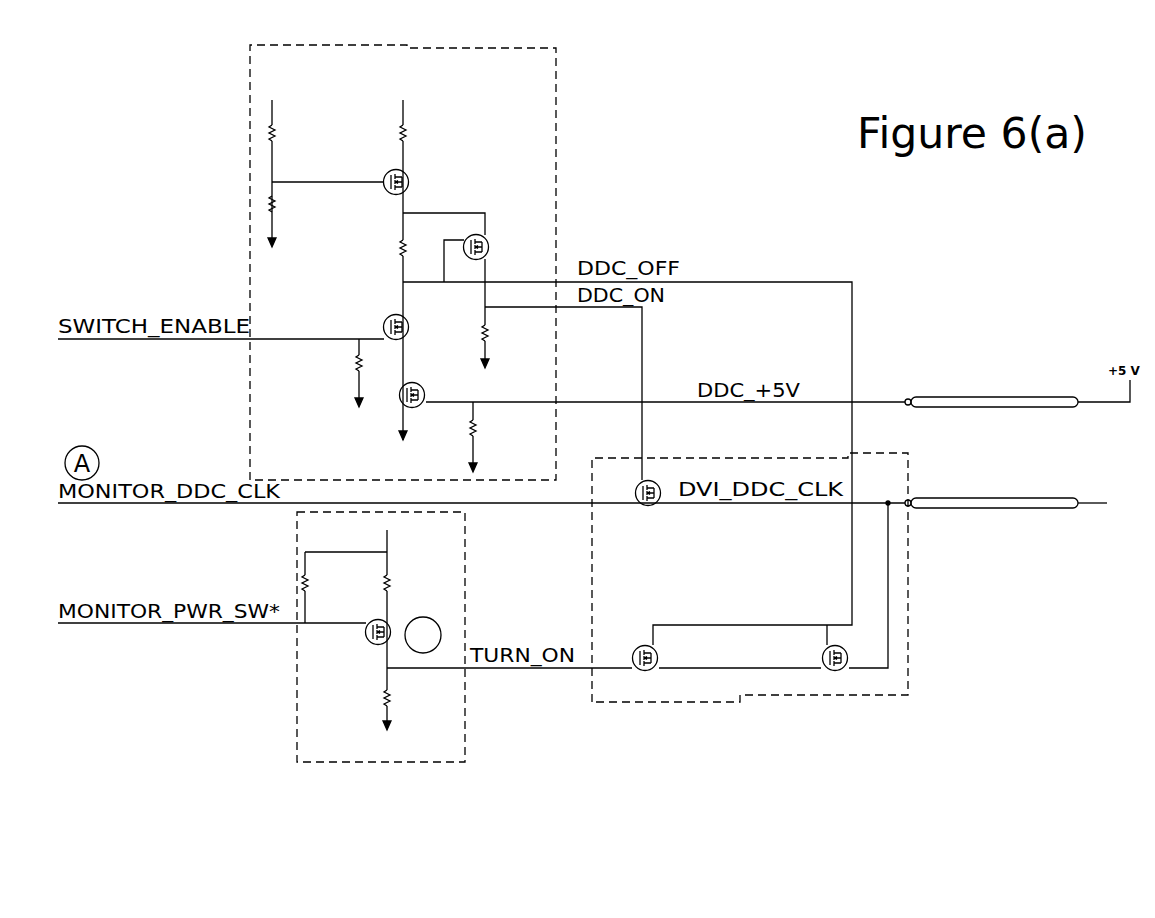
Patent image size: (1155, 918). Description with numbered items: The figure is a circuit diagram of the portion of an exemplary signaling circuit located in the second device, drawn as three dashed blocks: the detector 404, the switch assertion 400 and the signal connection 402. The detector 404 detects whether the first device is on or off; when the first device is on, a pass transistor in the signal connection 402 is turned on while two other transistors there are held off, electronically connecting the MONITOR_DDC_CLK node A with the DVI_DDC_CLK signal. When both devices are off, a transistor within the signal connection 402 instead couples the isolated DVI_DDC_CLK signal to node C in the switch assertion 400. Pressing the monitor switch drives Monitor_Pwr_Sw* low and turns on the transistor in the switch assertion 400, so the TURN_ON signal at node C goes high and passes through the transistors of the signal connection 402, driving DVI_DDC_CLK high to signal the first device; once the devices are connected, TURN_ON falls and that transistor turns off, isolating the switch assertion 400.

The detector 404 is at (570, 92).
The switch assertion 400 is at (402, 777).
The signal connection 402 is at (700, 722).